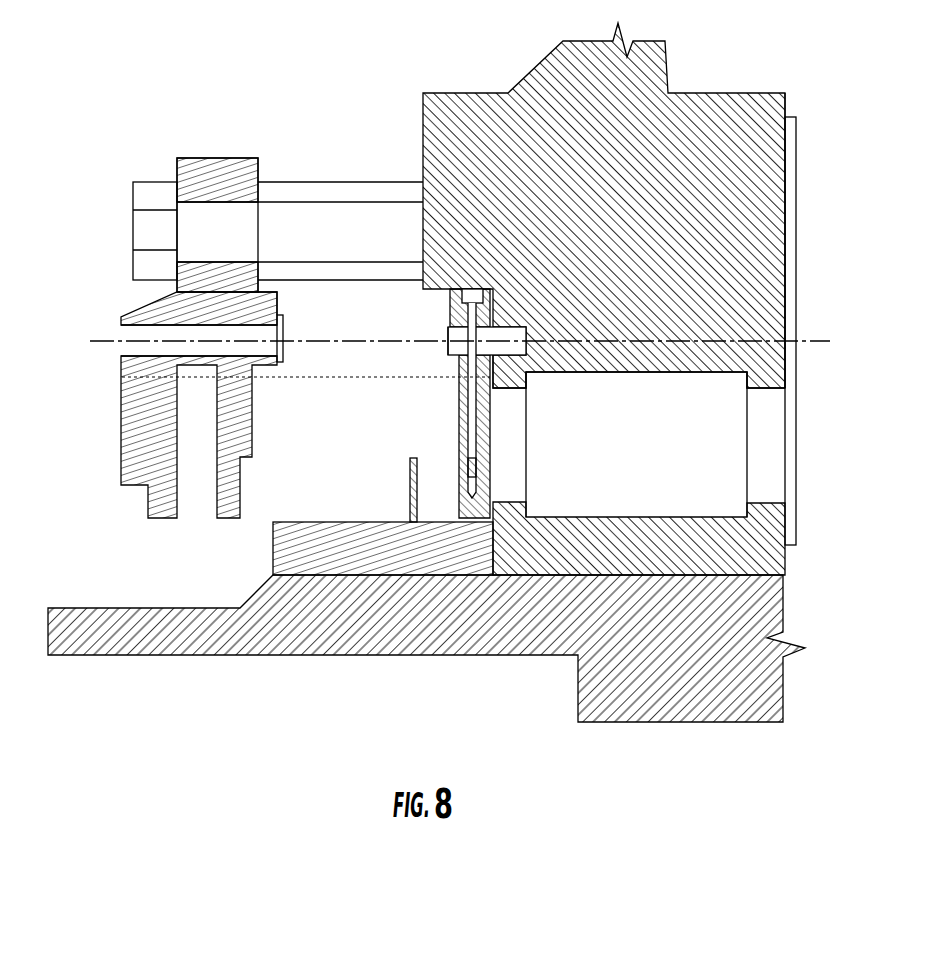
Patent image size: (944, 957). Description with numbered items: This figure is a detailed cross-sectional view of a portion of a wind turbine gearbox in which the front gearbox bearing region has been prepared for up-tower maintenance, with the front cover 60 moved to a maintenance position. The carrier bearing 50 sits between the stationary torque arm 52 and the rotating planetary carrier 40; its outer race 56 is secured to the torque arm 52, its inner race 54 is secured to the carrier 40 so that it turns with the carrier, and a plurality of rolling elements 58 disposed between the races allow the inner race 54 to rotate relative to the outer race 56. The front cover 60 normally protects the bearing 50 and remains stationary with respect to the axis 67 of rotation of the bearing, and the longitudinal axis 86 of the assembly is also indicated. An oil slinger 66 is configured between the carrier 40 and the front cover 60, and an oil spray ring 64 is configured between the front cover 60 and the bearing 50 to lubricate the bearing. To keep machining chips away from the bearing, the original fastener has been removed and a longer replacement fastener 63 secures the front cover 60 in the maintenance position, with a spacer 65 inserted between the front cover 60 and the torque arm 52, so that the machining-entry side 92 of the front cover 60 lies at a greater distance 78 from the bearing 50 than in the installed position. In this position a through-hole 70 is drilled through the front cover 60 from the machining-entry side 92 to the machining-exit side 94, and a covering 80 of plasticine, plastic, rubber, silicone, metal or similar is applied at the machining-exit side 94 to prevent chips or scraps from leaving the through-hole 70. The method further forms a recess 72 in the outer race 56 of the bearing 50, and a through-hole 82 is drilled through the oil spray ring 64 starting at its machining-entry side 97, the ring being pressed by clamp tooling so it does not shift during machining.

The planetary carrier 40 is at (105, 608).
The carrier bearing 50 is at (753, 278).
The torque arm 52 is at (423, 115).
The inner race 54 is at (785, 560).
The outer race 56 is at (796, 330).
The rolling elements 58 is at (747, 428).
The front cover 60 is at (185, 158).
The fastener 63 is at (133, 210).
The oil spray ring 64 is at (462, 412).
The spacer 65 is at (295, 182).
The oil slinger 66 is at (272, 530).
The axis 67 is at (121, 327).
The through-hole 70 is at (121, 350).
The recess 72 is at (527, 337).
The distance 78 is at (315, 378).
The covering 80 is at (283, 323).
The through-hole 82 is at (484, 300).
The longitudinal axis 86 is at (447, 346).
The machining-entry side 92 is at (126, 377).
The machining-exit side 94 is at (277, 307).
The machining-entry side 97 is at (450, 300).